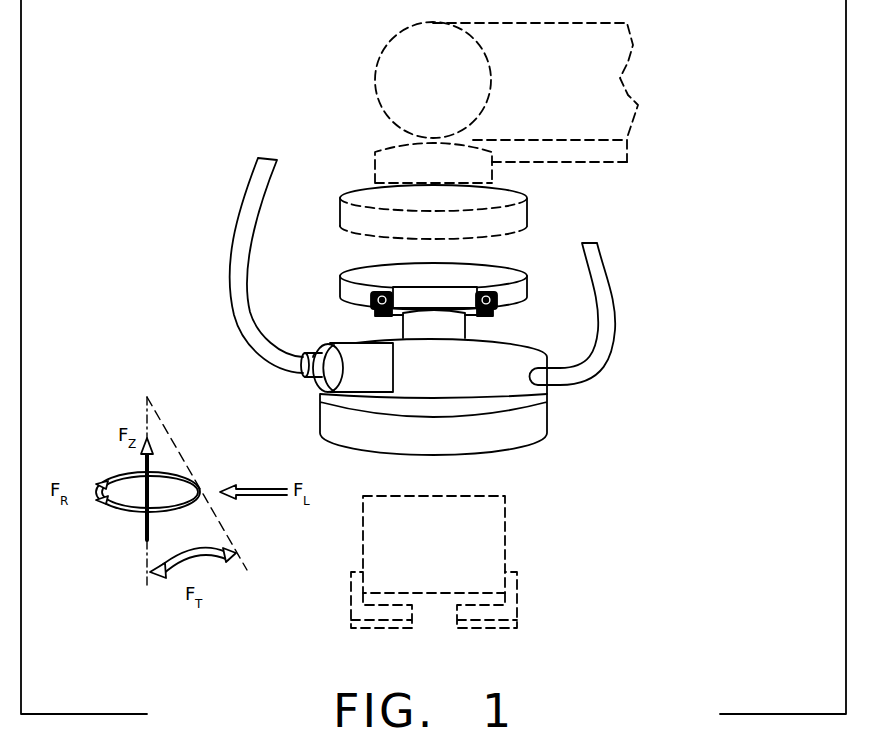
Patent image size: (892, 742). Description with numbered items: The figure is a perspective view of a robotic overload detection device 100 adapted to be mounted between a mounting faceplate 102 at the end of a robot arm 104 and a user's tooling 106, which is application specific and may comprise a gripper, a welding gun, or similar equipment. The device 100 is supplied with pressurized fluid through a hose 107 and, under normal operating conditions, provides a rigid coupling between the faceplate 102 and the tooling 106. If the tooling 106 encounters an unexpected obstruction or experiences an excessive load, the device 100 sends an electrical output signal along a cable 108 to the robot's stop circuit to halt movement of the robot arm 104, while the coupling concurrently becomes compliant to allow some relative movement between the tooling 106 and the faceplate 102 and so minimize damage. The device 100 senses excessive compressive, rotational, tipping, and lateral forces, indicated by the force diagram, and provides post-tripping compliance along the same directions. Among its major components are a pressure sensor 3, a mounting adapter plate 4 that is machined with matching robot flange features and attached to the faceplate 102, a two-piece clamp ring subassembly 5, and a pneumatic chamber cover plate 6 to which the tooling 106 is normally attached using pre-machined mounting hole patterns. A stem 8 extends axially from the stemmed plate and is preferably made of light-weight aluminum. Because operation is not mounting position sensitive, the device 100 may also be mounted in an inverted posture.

The pressure sensor 3 is at (353, 348).
The mounting adapter plate 4 is at (350, 283).
The two-piece clamp ring subassembly 5 is at (498, 313).
The pneumatic chamber cover plate 6 is at (465, 433).
The stem 8 is at (452, 326).
The overload detection device 100 is at (548, 409).
The mounting faceplate 102 is at (527, 197).
The robot arm 104 is at (632, 125).
The tooling 106 is at (505, 523).
The hose 107 is at (615, 303).
The cable 108 is at (259, 224).